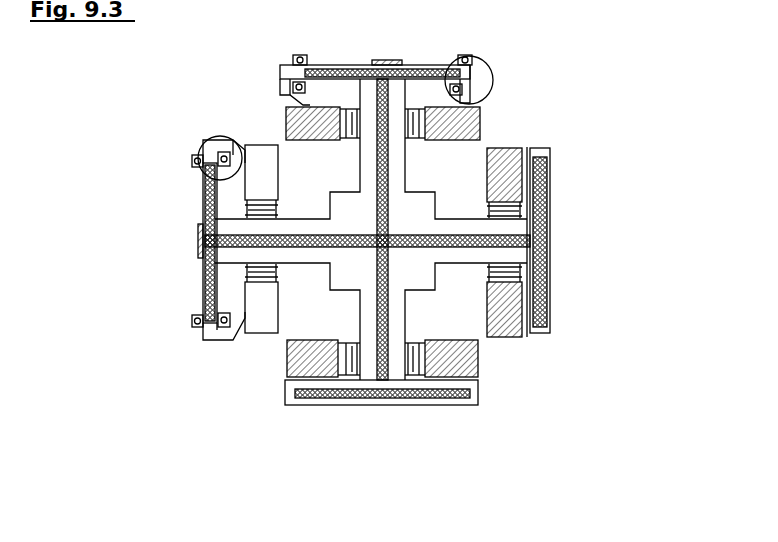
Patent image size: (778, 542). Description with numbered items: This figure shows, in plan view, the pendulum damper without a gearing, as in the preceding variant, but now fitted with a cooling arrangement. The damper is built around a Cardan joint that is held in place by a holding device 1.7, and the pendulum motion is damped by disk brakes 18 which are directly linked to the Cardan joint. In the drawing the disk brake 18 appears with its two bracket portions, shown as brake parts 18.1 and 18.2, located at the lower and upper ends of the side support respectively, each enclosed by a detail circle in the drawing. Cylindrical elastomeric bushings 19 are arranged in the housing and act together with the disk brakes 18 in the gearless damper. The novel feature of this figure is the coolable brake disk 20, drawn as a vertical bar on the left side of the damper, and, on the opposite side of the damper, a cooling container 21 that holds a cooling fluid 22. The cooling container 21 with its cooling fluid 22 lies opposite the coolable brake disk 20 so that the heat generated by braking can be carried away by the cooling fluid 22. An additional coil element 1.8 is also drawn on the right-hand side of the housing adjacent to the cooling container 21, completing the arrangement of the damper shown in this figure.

The holding device 1.7 is at (430, 360).
The coil 1.8 is at (508, 179).
The disk brake 18 is at (202, 147).
The lower bracket 18.1 is at (201, 342).
The upper bracket 18.2 is at (282, 93).
The cylindrical elastomeric bushing 19 is at (407, 350).
The coolable brake disk 20 is at (205, 285).
The cooling container 21 is at (550, 197).
The cooling fluid 22 is at (543, 158).